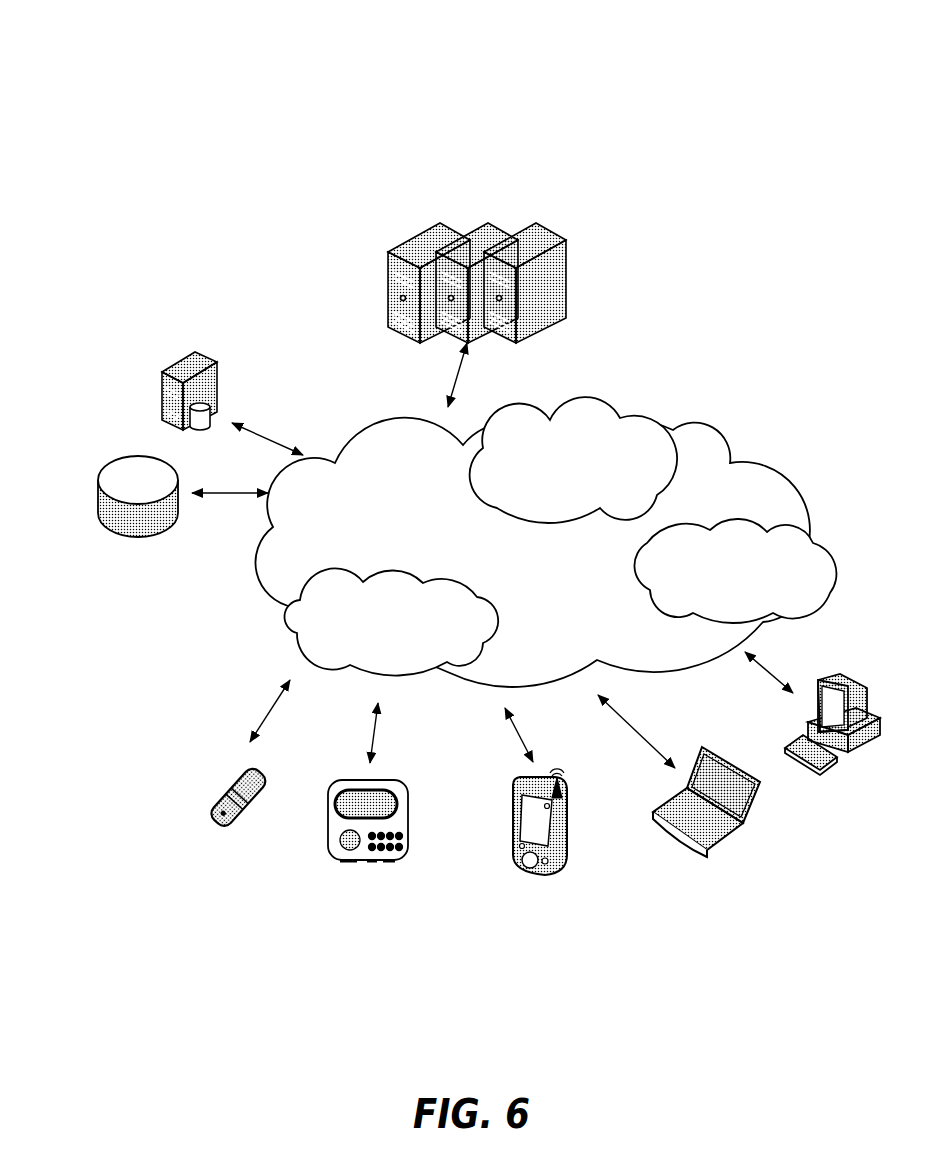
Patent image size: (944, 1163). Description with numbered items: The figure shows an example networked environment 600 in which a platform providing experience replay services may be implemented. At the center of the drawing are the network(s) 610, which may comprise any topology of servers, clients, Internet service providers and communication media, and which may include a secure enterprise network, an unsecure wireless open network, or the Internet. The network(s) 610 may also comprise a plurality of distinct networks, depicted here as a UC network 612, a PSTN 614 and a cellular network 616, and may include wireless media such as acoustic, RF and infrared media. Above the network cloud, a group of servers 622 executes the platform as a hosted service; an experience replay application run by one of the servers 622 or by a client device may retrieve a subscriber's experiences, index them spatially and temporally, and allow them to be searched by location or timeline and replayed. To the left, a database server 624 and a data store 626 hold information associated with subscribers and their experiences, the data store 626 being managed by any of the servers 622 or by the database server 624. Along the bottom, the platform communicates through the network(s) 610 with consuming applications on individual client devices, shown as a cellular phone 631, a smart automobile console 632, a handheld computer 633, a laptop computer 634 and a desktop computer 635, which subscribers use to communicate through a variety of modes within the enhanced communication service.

The communication system 600 is at (684, 84).
The network(s) 610 is at (397, 406).
The UC network 612 is at (601, 401).
The PSTN 614 is at (339, 566).
The cellular network 616 is at (708, 511).
The servers 622 is at (396, 221).
The database server 624 is at (187, 341).
The data store 626 is at (147, 446).
The cellular phone 631 is at (214, 842).
The smart automobile console 632 is at (370, 883).
The handheld computer 633 is at (550, 889).
The laptop computer 634 is at (734, 863).
The desktop computer 635 is at (871, 770).